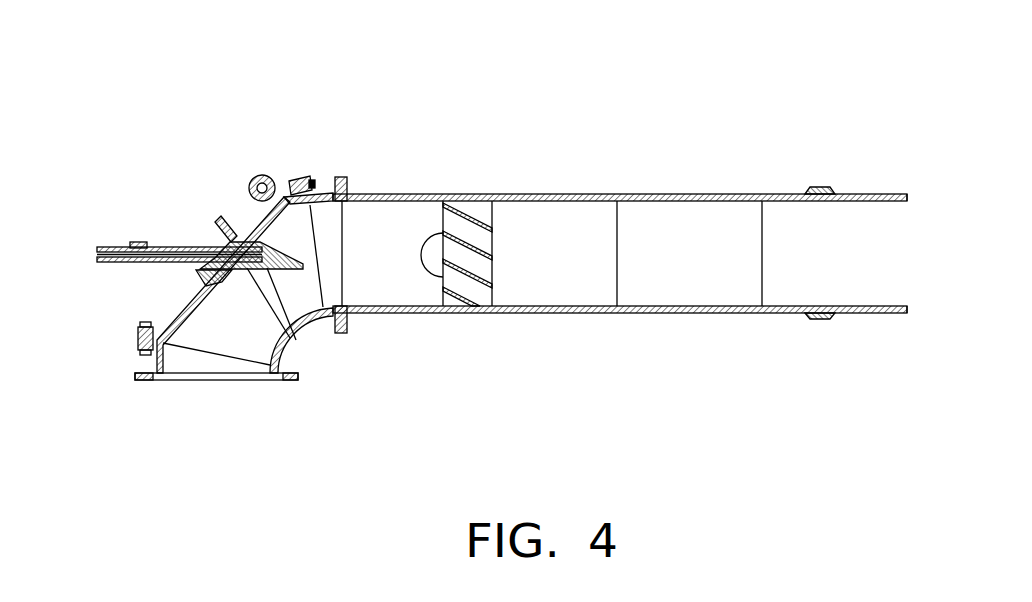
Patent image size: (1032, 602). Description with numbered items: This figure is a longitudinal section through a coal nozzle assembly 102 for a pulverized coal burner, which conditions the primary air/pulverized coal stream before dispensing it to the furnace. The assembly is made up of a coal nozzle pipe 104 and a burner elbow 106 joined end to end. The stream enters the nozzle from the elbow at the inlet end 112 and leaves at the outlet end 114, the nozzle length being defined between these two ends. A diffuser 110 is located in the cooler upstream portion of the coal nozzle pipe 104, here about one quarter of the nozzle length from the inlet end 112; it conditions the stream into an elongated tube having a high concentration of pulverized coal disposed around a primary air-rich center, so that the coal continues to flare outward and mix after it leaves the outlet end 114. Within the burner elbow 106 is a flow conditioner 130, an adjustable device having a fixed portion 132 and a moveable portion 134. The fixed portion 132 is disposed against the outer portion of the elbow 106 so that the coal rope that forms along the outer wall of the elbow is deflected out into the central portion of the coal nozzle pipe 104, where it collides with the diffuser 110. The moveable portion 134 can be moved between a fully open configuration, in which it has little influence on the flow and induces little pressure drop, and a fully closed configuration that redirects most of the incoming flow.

The coal nozzle assembly 102 is at (418, 348).
The coal nozzle pipe 104 is at (617, 215).
The burner elbow 106 is at (153, 303).
The diffuser 110 is at (505, 277).
The inlet end 112 is at (413, 183).
The outlet end 114 is at (897, 313).
The flow conditioner 130 is at (212, 290).
The fixed portion 132 is at (207, 298).
The moveable portion 134 is at (281, 238).